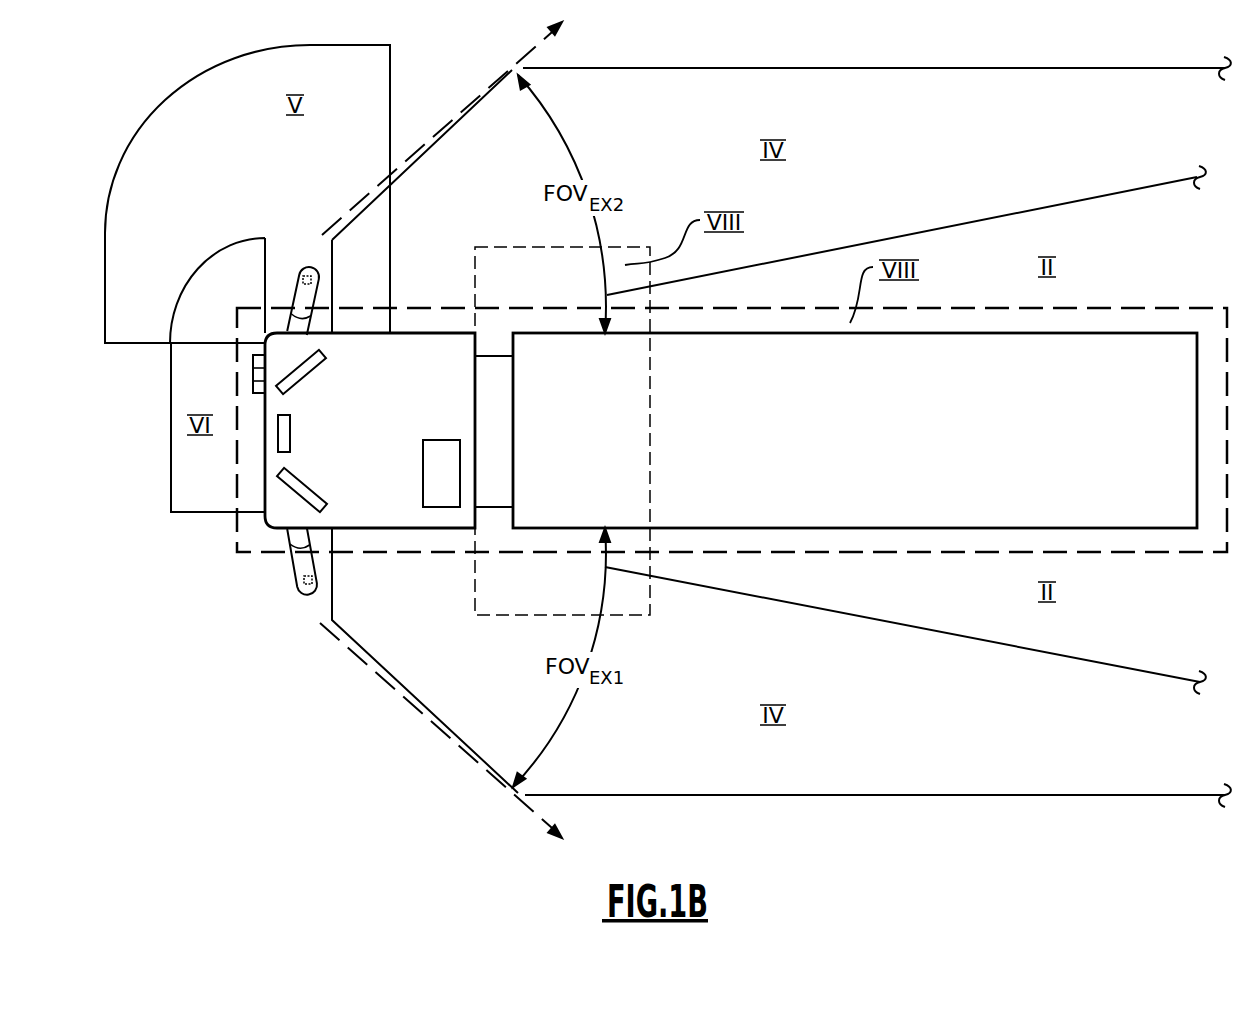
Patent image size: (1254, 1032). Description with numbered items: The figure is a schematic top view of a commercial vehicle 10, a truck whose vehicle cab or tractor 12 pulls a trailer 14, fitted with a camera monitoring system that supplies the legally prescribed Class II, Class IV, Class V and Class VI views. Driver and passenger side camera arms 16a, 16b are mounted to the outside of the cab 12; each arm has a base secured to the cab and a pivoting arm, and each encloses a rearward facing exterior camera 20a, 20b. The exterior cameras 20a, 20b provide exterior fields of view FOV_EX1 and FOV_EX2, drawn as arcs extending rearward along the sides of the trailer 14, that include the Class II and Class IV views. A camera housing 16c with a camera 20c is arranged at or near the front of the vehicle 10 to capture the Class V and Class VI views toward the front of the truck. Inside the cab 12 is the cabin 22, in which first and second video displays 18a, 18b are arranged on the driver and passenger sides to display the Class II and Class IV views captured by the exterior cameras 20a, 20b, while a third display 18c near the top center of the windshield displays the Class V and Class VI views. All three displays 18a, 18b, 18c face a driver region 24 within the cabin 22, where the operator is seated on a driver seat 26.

The commercial vehicle 10 is at (231, 318).
The vehicle cab 12 is at (262, 522).
The trailer 14 is at (1109, 320).
The driver side camera arm 16a is at (297, 573).
The passenger side camera arm 16b is at (302, 283).
The camera housing 16c is at (253, 381).
The first video display 18a is at (308, 482).
The second video display 18b is at (310, 372).
The third display 18c is at (278, 433).
The exterior camera 20a is at (318, 583).
The exterior camera 20b is at (314, 278).
The camera 20c is at (253, 357).
The cabin 22 is at (416, 338).
The driver region 24 is at (406, 460).
The driver seat 26 is at (443, 450).